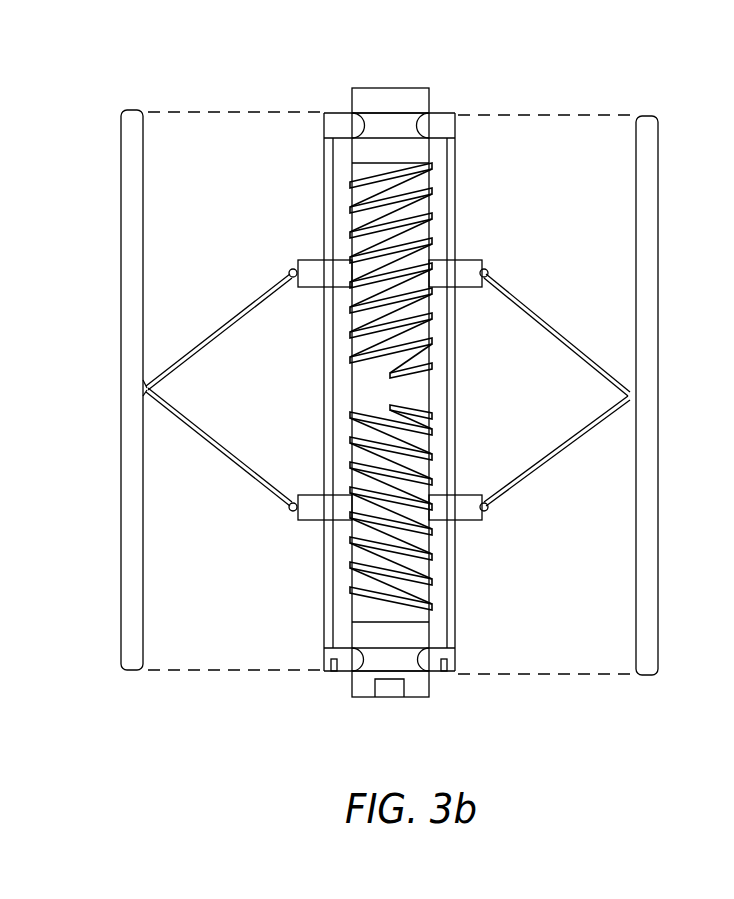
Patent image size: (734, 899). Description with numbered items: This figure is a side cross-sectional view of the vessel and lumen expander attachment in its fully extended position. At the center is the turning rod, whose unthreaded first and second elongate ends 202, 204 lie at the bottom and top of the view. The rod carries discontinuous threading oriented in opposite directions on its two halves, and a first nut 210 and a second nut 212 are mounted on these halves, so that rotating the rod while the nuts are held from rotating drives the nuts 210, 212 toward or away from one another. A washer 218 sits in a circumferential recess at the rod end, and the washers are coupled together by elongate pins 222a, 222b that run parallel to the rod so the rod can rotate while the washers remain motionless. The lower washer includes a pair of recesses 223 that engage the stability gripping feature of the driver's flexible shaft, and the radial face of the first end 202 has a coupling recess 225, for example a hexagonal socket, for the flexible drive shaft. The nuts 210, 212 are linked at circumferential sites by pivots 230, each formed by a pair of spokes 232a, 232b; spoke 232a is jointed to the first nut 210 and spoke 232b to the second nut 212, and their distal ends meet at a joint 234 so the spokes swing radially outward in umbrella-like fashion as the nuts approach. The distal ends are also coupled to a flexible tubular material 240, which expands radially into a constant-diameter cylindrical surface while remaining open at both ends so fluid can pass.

The first elongate end 202 is at (418, 699).
The second elongate end 204 is at (408, 98).
The first nut 210 is at (473, 268).
The second nut 212 is at (460, 500).
The washer 218 is at (444, 121).
The elongate pin 222a is at (452, 550).
The elongate pin 222b is at (326, 603).
The recesses 223 is at (333, 672).
The coupling recess 225 is at (388, 697).
The pivot 230 is at (297, 512).
The spoke 232a is at (248, 312).
The spoke 232b is at (232, 453).
The joint 234 is at (150, 385).
The flexible tubular material 240 is at (130, 290).